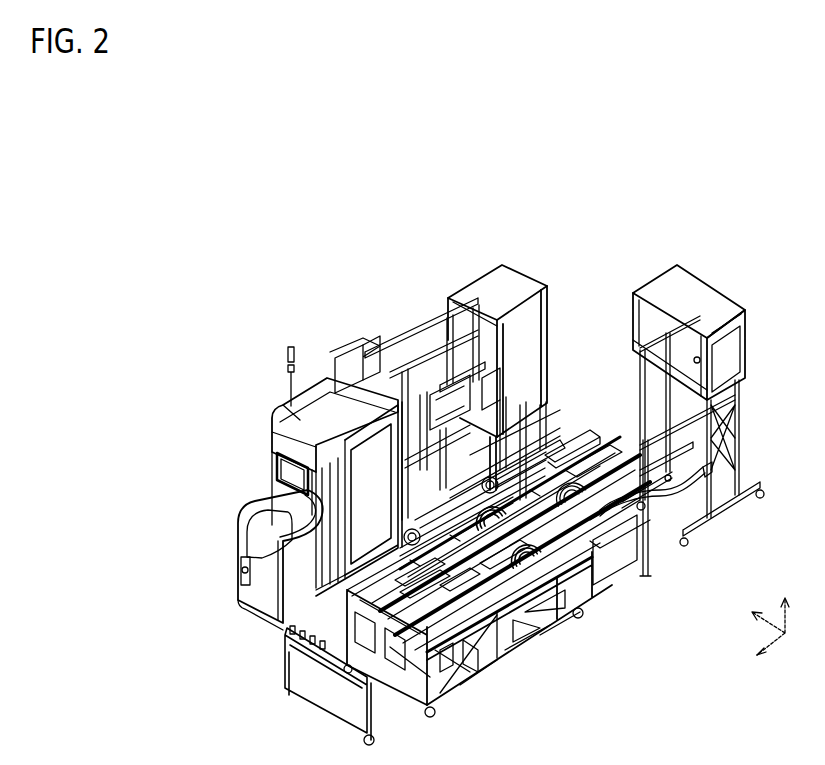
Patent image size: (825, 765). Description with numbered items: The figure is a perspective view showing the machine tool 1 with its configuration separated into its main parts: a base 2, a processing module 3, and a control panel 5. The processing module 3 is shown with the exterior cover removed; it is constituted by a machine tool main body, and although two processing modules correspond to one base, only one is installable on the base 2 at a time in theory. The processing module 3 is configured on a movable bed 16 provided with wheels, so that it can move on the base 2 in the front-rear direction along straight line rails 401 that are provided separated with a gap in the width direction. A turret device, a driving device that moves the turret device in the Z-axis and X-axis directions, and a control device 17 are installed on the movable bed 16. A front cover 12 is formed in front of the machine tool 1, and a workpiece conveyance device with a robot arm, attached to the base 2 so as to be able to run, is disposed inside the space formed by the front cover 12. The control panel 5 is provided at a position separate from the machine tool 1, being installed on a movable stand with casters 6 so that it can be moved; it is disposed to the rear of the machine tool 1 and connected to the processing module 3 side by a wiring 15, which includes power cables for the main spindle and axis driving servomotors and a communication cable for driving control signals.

The machine tool 1 is at (242, 448).
The base 2 is at (582, 618).
The processing module 3 is at (315, 388).
The control panel 5 is at (728, 353).
The movable stand with casters 6 is at (740, 433).
The front cover 12 is at (297, 666).
The wiring 15 is at (672, 497).
The movable bed 16 is at (553, 462).
The control device 17 is at (528, 330).
The straight line rails 401 is at (470, 678).